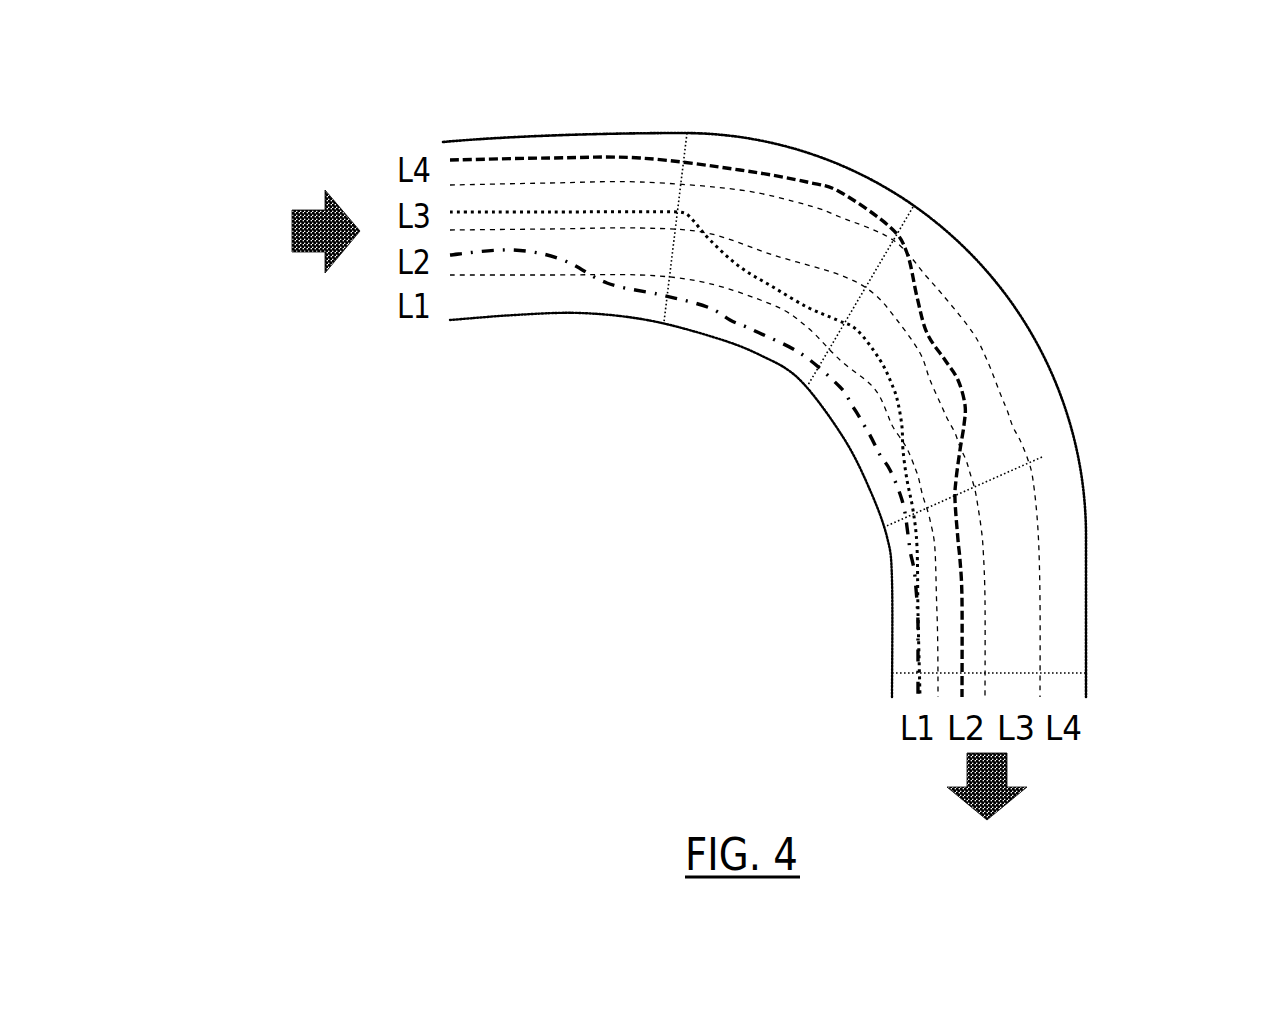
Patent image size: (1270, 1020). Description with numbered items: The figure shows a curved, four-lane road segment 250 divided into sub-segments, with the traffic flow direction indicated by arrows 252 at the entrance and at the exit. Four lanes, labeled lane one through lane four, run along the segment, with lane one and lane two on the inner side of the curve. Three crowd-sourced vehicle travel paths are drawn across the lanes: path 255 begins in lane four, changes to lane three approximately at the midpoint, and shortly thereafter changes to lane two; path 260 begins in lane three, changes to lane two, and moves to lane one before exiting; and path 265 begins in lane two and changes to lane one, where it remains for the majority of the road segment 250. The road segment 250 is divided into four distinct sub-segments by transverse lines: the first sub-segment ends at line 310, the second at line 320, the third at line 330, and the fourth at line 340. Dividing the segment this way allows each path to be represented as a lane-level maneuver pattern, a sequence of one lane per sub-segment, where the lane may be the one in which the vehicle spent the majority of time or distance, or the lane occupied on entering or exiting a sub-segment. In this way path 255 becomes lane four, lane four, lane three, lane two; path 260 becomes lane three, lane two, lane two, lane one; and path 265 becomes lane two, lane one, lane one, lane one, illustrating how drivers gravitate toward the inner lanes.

The road segment 250 is at (973, 257).
The arrows 252 is at (315, 220).
The path 255 is at (737, 158).
The path 260 is at (758, 280).
The path 265 is at (632, 295).
The line 310 is at (675, 190).
The line 320 is at (903, 220).
The line 330 is at (1042, 457).
The line 340 is at (1068, 672).